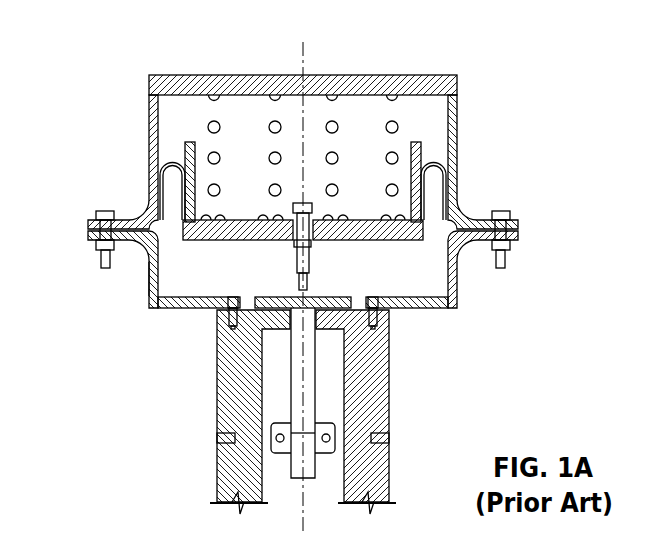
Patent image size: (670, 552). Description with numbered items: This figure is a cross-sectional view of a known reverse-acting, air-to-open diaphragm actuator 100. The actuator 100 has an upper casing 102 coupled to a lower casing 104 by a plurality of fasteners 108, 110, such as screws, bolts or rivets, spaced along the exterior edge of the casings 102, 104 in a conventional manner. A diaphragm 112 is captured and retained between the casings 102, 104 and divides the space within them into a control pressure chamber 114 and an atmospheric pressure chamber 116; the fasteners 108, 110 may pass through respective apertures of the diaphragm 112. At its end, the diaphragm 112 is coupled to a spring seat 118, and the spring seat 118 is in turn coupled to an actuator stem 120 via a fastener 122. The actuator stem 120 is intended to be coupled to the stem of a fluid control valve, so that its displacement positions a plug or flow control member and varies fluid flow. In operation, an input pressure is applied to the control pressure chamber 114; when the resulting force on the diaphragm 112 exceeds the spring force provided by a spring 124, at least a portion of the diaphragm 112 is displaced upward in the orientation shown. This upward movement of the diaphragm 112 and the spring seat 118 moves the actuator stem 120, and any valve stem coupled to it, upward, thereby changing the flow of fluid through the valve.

The diaphragm actuator 100 is at (124, 44).
The upper casing 102 is at (457, 96).
The lower casing 104 is at (455, 288).
The fastener 108 is at (105, 211).
The fastener 110 is at (499, 211).
The diaphragm 112 is at (185, 142).
The control pressure chamber 114 is at (264, 279).
The atmospheric pressure chamber 116 is at (265, 172).
The spring seat 118 is at (192, 246).
The actuator stem 120 is at (298, 352).
The fastener 122 is at (313, 242).
The spring 124 is at (334, 121).